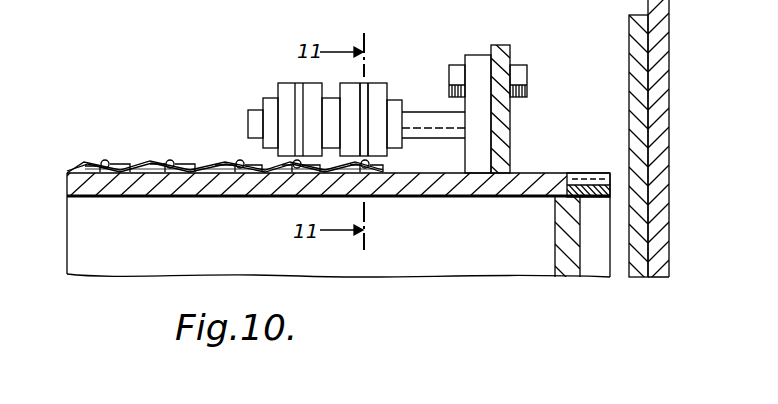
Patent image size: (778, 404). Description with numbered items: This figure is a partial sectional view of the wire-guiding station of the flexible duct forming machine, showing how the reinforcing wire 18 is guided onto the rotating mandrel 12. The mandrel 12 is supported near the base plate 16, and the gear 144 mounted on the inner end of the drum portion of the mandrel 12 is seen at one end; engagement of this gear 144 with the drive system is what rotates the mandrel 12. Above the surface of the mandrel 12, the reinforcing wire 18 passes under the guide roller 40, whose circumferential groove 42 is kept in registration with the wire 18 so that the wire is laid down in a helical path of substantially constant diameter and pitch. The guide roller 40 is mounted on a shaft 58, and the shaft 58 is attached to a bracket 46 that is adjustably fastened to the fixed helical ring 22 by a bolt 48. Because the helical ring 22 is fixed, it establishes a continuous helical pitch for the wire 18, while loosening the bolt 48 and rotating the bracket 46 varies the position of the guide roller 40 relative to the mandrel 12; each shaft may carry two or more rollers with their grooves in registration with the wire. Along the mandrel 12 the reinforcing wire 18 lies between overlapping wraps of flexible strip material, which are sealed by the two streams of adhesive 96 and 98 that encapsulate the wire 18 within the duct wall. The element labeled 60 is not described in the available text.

The mandrel 12 is at (88, 187).
The base plate 16 is at (670, 42).
The reinforcing wire 18 is at (276, 166).
The helical ring 22 is at (511, 118).
The guide roller 40 is at (378, 95).
The circumferential groove 42 is at (365, 92).
The bracket 46 is at (476, 55).
The bolt 48 is at (518, 65).
The shaft 58 is at (250, 113).
The wall layer 60 is at (629, 30).
The stream of adhesive 96 is at (93, 171).
The stream of adhesive 98 is at (123, 167).
The gear 144 is at (598, 173).